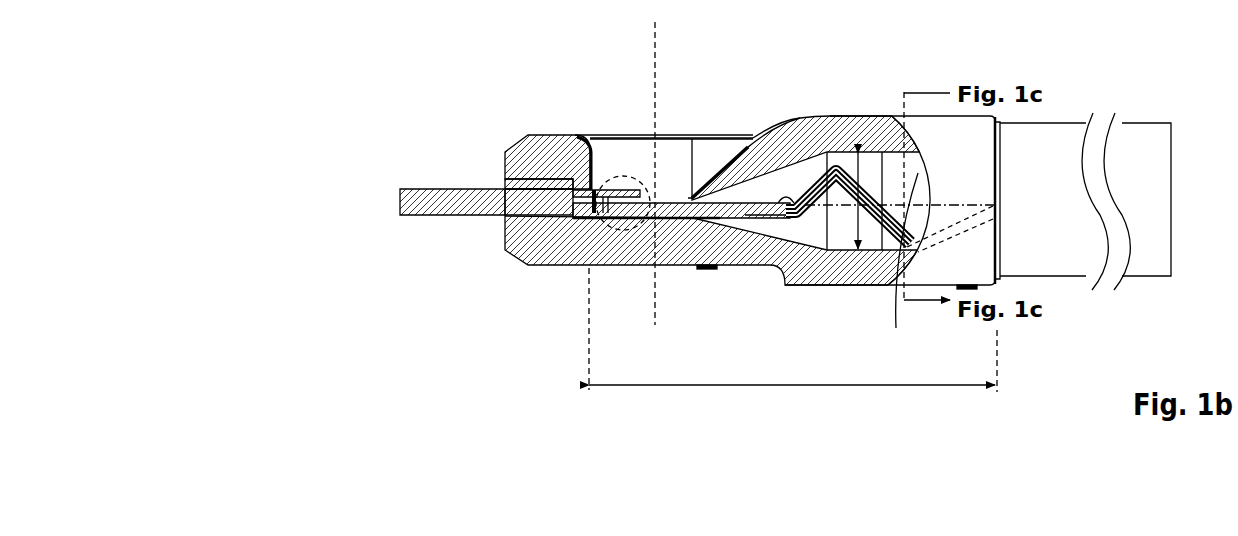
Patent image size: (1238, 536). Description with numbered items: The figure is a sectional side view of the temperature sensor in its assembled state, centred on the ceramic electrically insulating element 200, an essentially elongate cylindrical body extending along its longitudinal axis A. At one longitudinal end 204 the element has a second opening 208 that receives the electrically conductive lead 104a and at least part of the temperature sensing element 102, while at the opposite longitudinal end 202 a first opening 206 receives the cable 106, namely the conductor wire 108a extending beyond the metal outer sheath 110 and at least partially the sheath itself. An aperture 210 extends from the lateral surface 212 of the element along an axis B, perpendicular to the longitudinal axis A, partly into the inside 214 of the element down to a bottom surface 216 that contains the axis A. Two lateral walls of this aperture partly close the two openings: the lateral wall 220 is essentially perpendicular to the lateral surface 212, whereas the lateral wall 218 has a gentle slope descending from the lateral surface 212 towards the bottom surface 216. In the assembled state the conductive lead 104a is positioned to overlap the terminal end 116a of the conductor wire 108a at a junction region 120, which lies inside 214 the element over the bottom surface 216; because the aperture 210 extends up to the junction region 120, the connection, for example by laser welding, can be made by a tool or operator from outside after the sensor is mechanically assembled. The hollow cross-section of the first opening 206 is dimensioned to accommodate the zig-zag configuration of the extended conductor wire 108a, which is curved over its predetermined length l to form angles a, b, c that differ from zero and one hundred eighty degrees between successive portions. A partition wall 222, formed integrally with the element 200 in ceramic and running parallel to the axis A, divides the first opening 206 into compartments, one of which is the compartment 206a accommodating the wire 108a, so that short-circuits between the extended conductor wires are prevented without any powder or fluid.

The temperature sensing element 102 is at (441, 187).
The second opening 208 is at (530, 185).
The longitudinal end 204 is at (505, 240).
The lateral wall 220 is at (593, 138).
The inside 214 is at (610, 148).
The aperture 210 is at (673, 155).
The partition wall 222 is at (803, 137).
The lateral wall 218 is at (728, 136).
The lateral surface 212 is at (860, 115).
The electrically insulating element 200 is at (830, 118).
The conductor wire 108a is at (886, 115).
The longitudinal end 202 is at (1000, 121).
The outer sheath 110 is at (1057, 135).
The cable 106 is at (1148, 135).
The electrically conductive lead 104a is at (603, 222).
The bottom surface 216 is at (658, 221).
The terminal end 116a is at (697, 221).
The junction region 120 is at (617, 228).
The first opening 206 is at (845, 250).
The compartment 206a is at (815, 240).
The angle a is at (786, 196).
The angle b is at (850, 201).
The angle c is at (918, 175).
The longitudinal axis A is at (942, 203).
The axis B is at (657, 58).
The predetermined length l is at (730, 383).